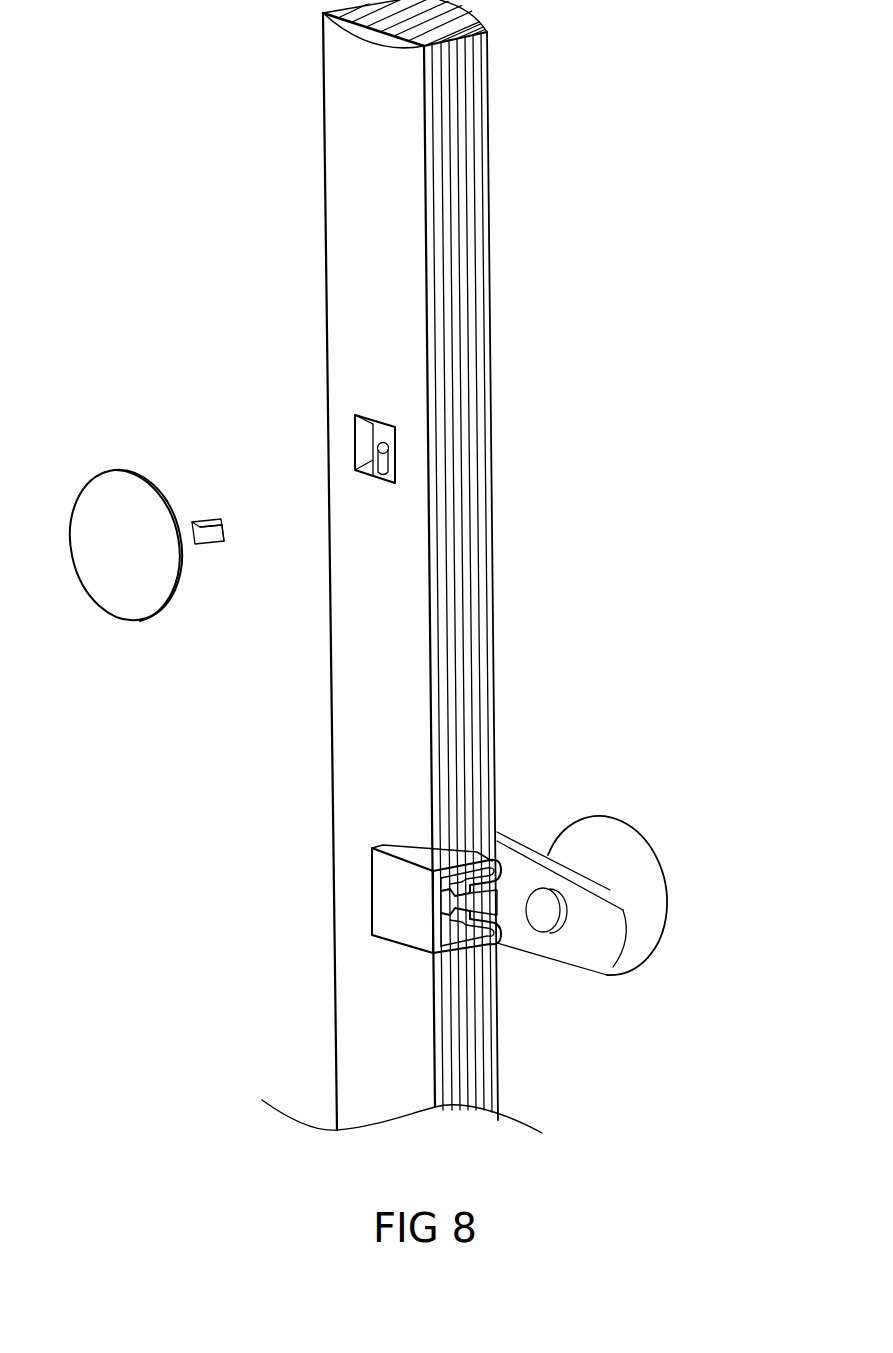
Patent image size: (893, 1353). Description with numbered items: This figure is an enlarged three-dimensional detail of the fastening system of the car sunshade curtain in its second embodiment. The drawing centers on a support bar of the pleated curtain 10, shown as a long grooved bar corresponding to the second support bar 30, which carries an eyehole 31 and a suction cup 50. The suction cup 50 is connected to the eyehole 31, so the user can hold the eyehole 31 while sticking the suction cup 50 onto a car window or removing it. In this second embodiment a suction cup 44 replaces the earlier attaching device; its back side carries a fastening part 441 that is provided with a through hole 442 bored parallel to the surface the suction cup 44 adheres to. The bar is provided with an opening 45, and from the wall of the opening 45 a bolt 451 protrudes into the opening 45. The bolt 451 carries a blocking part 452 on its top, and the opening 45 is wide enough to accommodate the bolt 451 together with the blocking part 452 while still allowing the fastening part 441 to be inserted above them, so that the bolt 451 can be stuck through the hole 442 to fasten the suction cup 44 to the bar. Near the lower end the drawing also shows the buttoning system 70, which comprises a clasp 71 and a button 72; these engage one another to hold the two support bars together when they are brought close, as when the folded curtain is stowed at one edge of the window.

The pleated curtain 10 is at (465, 410).
The second support bar 30 is at (485, 173).
The eyehole 31 is at (562, 922).
The suction cup 44 is at (107, 487).
The fastening part 441 is at (212, 530).
The through hole 442 is at (203, 520).
The opening 45 is at (365, 430).
The bolt 451 is at (398, 466).
The blocking part 452 is at (395, 447).
The suction cup 50 is at (613, 843).
The buttoning system 70 is at (307, 907).
The clasp 71 is at (405, 920).
The button 72 is at (513, 883).